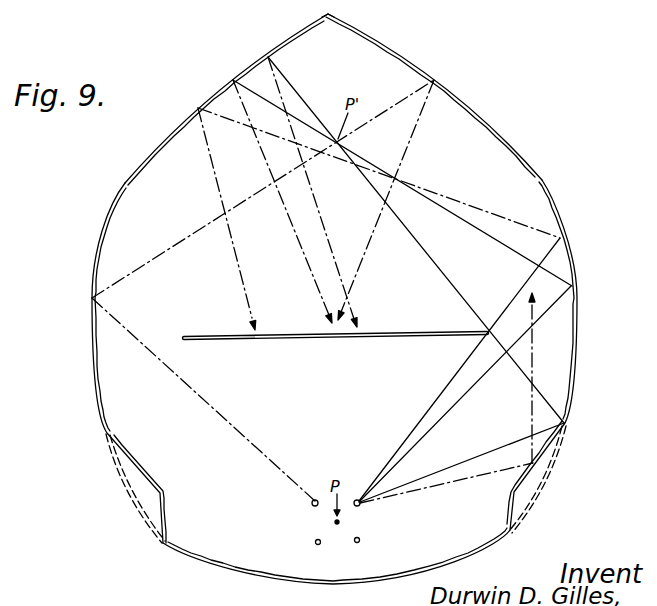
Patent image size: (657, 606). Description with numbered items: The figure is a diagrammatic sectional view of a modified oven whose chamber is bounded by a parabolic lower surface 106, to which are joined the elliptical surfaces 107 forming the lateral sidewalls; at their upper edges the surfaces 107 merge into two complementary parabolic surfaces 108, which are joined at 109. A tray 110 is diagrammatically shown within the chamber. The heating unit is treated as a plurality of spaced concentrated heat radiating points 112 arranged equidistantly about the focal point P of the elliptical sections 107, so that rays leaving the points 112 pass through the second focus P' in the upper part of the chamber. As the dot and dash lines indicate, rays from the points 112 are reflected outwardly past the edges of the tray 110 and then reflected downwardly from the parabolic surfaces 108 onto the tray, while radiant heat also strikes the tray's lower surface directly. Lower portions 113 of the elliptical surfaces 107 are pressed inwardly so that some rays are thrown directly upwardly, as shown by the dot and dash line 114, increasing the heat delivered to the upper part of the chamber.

The parabolic lower surface 106 is at (345, 581).
The elliptical surfaces 107 is at (90, 317).
The complementary parabolic surfaces 108 is at (231, 81).
The junction of parabolic surfaces 109 is at (325, 22).
The tray 110 is at (293, 340).
The heat radiating points 112 is at (315, 499).
The inwardly pressed portions 113 is at (133, 470).
The dot and dash line 114 is at (482, 477).